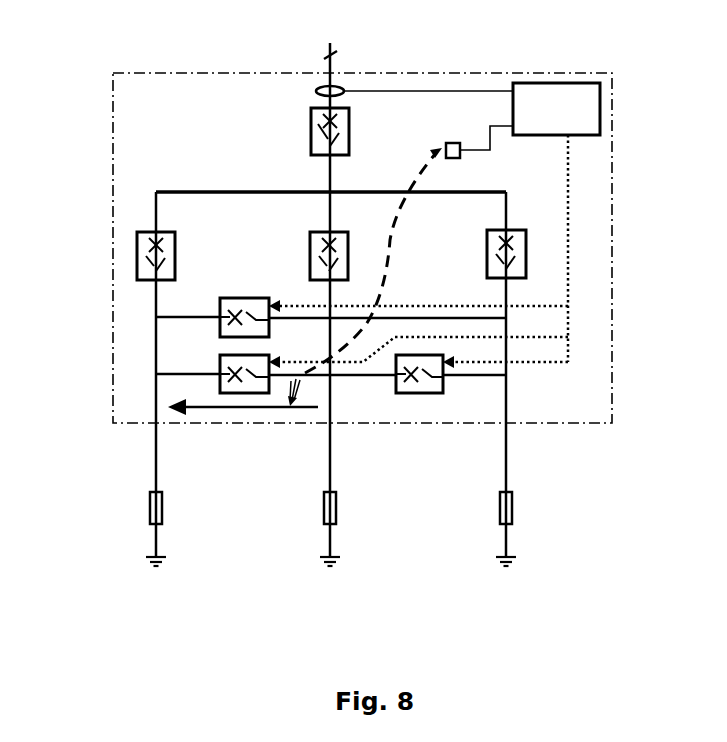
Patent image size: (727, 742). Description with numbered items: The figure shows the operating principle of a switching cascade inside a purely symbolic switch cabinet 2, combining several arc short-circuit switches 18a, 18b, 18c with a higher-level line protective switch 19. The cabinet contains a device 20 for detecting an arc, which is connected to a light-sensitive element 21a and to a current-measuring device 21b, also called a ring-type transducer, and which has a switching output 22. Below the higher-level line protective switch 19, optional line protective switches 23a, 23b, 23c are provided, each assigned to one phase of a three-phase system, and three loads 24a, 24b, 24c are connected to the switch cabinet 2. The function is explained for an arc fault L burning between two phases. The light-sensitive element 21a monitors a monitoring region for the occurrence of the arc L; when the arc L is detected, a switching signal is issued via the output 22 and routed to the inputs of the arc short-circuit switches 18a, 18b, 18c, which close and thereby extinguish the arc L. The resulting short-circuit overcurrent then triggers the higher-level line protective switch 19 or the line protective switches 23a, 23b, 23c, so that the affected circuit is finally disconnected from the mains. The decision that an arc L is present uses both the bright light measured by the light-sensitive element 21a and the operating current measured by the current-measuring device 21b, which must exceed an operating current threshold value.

The switch cabinet 2 is at (112, 175).
The higher-level line protective switch 19 is at (318, 143).
The device for detecting an arc 20 is at (567, 90).
The light-sensitive element 21a is at (452, 150).
The current-measuring device 21b is at (334, 86).
The switching output 22 is at (565, 207).
The line protective switch 23a is at (142, 263).
The line protective switch 23b is at (317, 267).
The line protective switch 23c is at (497, 263).
The arc short-circuit switch 18a is at (220, 362).
The arc short-circuit switch 18b is at (220, 303).
The arc short-circuit switch 18c is at (438, 380).
The arc fault L is at (246, 407).
The load 24a is at (155, 505).
The load 24b is at (328, 505).
The load 24c is at (505, 510).